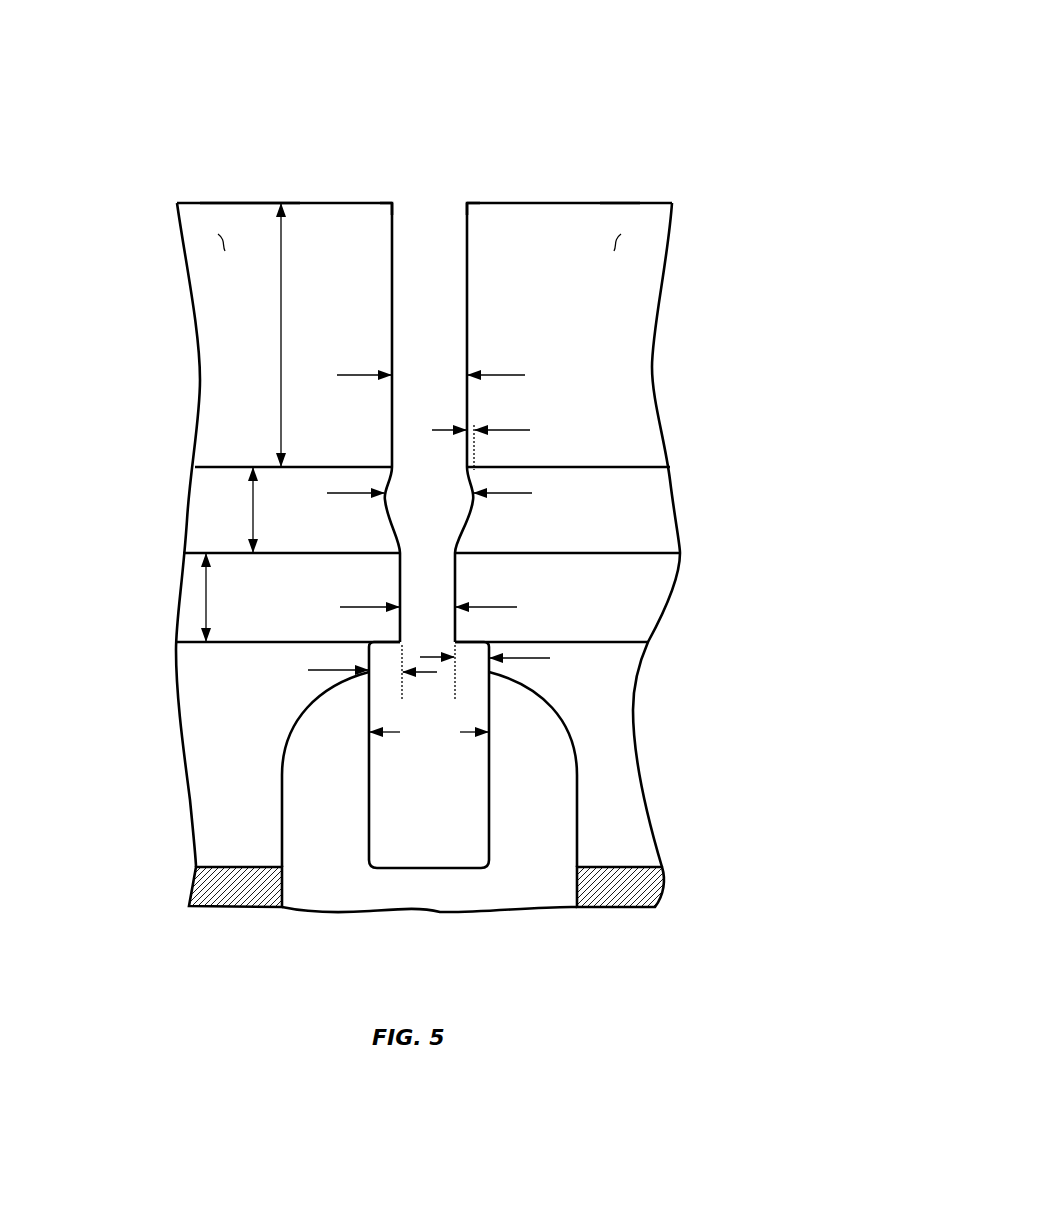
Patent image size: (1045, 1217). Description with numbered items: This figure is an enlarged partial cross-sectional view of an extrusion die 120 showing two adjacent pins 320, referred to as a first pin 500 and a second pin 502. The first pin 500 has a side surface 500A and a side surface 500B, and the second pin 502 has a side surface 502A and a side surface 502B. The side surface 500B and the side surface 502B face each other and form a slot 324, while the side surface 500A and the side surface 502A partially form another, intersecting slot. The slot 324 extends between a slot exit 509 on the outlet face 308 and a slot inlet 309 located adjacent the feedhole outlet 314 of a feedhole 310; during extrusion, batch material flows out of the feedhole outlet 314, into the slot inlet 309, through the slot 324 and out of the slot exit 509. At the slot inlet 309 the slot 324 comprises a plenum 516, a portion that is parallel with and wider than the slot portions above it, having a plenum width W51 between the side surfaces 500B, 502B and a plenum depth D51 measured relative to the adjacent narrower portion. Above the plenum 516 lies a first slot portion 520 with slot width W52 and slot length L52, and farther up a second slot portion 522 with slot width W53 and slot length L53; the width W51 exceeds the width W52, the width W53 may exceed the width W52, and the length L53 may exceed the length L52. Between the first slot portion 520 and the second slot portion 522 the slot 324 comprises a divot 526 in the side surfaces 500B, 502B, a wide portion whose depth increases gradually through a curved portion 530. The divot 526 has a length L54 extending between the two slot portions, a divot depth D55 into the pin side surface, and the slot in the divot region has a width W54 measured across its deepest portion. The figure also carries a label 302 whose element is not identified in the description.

The extrusion die 120 is at (614, 70).
The outlet face 308 is at (250, 198).
The pins 320 is at (215, 201).
The slot exit 509 is at (420, 196).
The slot 324 is at (438, 218).
The side surface 500B is at (393, 211).
The side surface 502B is at (466, 211).
The side surface 500A is at (218, 243).
The side surface 502A is at (621, 243).
The second slot portion 522 is at (469, 325).
The first pin 500 is at (199, 372).
The second pin 502 is at (655, 368).
The slot length L53 is at (281, 393).
The slot width W53 is at (513, 376).
The body 302 is at (196, 441).
The divot depth D55 is at (522, 430).
The width W54 is at (517, 493).
The length L54 is at (253, 505).
The divot 526 is at (478, 511).
The curved portion 530 is at (468, 527).
The slot length L52 is at (206, 592).
The first slot portion 520 is at (457, 580).
The slot width W52 is at (505, 607).
The plenum depth D51 is at (328, 670).
The plenum width W51 is at (429, 732).
The plenum 516 is at (490, 779).
The feedhole outlet 314 is at (322, 843).
The slot inlet 309 is at (437, 880).
The feedhole 310 is at (335, 915).